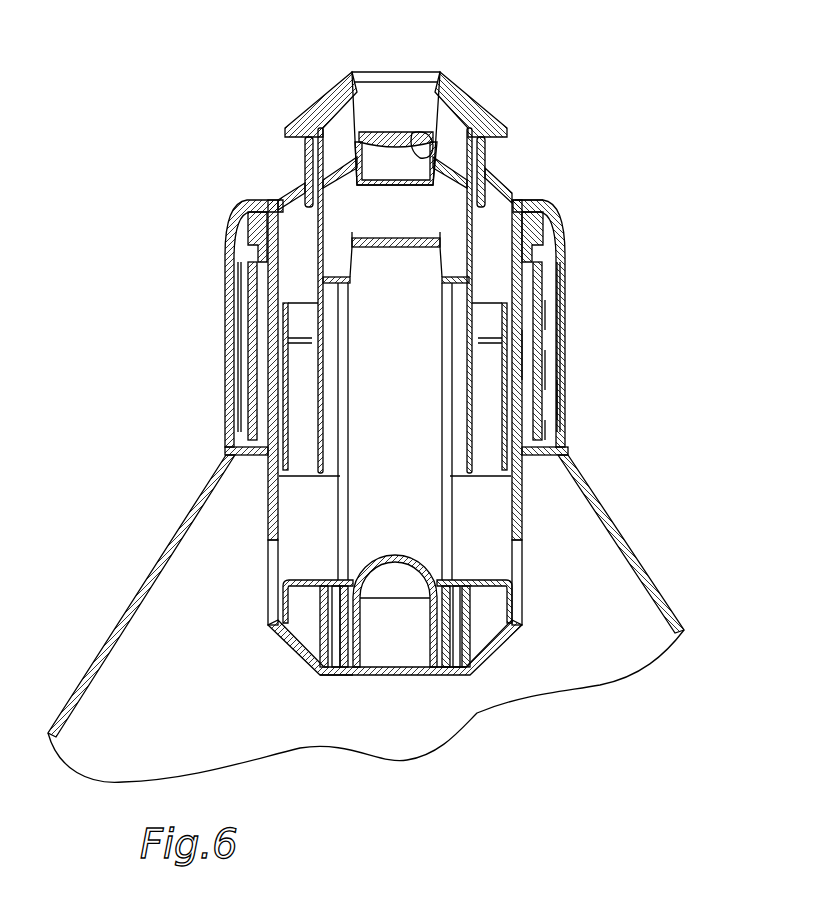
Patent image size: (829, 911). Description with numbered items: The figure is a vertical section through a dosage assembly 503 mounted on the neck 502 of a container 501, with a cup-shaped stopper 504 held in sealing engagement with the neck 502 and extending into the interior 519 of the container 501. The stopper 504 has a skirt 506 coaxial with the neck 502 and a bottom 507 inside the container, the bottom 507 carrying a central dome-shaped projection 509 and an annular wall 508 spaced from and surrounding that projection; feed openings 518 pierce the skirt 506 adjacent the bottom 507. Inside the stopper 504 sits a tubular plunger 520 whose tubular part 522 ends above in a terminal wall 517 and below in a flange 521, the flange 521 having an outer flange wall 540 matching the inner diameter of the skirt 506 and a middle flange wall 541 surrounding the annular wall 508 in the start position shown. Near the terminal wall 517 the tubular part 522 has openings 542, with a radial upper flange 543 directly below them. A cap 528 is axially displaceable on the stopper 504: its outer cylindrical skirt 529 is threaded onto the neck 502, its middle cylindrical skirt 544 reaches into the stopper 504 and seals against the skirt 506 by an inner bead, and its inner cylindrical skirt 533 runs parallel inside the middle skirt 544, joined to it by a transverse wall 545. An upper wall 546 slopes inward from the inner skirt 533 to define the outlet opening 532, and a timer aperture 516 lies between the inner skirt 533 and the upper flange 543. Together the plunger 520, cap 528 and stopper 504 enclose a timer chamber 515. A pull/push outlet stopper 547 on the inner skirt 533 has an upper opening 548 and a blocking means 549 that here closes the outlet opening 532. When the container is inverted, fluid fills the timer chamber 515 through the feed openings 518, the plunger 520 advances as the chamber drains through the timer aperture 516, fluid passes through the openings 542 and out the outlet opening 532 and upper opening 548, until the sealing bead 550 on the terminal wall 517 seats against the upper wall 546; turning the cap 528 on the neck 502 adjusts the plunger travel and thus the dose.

The container 501 is at (617, 520).
The neck 502 is at (566, 277).
The dosage assembly 503 is at (528, 183).
The stopper 504 is at (524, 498).
The skirt 506 is at (560, 374).
The bottom 507 is at (468, 679).
The annular wall 508 is at (467, 639).
The dome-shaped projection 509 is at (432, 648).
The timer chamber 515 is at (333, 507).
The timer aperture 516 is at (332, 268).
The terminal wall 517 is at (404, 240).
The feed openings 518 is at (520, 574).
The interior 519 is at (363, 728).
The plunger 520 is at (562, 430).
The flange 521 is at (482, 569).
The tubular part 522 is at (564, 357).
The cap 528 is at (480, 222).
The outer cylindrical skirt 529 is at (565, 297).
The outlet opening 532 is at (412, 140).
The inner cylindrical skirt 533 is at (562, 397).
The outer flange wall 540 is at (510, 605).
The middle flange wall 541 is at (468, 616).
The openings 542 is at (546, 207).
The upper flange 543 is at (536, 240).
The middle cylindrical skirt 544 is at (556, 322).
The transverse wall 545 is at (563, 338).
The upper wall 546 is at (415, 150).
The outlet stopper 547 is at (332, 88).
The upper opening 548 is at (380, 72).
The blocking means 549 is at (300, 118).
The sealing bead 550 is at (296, 192).